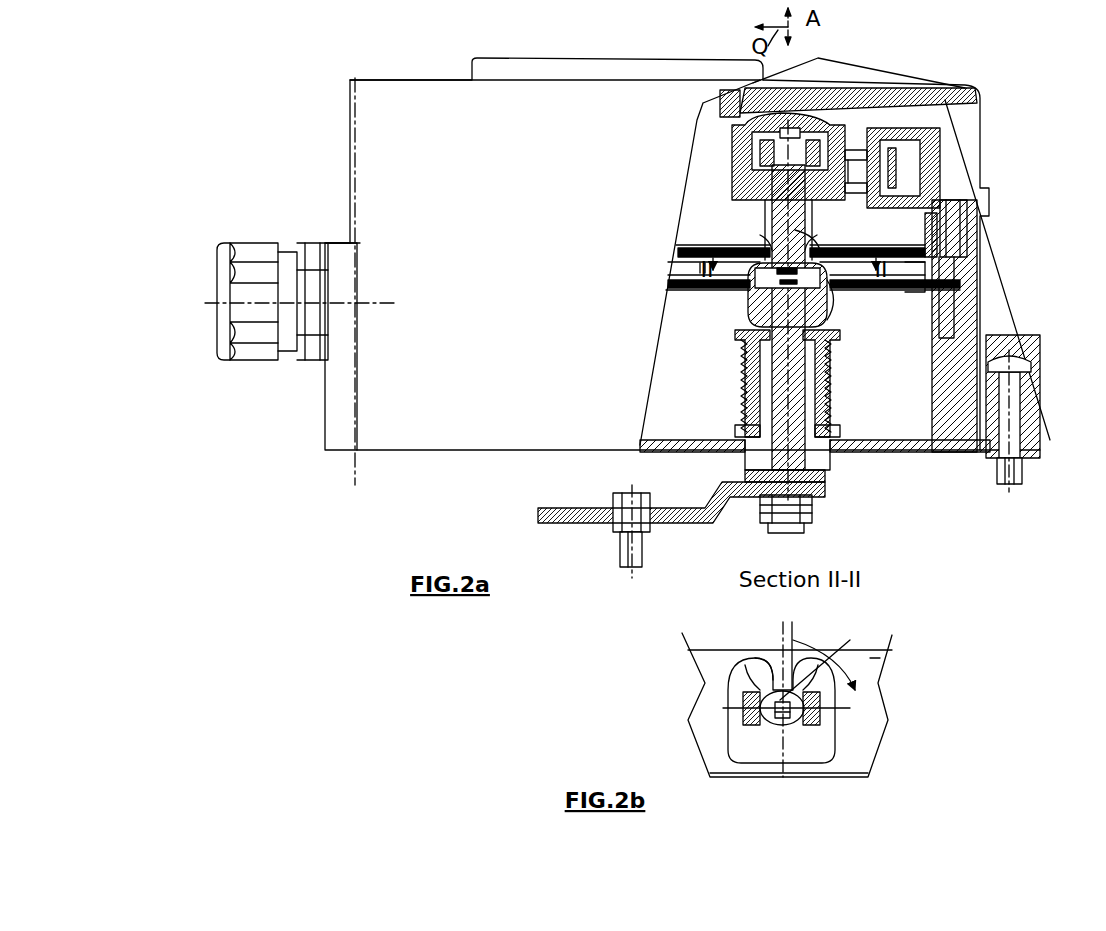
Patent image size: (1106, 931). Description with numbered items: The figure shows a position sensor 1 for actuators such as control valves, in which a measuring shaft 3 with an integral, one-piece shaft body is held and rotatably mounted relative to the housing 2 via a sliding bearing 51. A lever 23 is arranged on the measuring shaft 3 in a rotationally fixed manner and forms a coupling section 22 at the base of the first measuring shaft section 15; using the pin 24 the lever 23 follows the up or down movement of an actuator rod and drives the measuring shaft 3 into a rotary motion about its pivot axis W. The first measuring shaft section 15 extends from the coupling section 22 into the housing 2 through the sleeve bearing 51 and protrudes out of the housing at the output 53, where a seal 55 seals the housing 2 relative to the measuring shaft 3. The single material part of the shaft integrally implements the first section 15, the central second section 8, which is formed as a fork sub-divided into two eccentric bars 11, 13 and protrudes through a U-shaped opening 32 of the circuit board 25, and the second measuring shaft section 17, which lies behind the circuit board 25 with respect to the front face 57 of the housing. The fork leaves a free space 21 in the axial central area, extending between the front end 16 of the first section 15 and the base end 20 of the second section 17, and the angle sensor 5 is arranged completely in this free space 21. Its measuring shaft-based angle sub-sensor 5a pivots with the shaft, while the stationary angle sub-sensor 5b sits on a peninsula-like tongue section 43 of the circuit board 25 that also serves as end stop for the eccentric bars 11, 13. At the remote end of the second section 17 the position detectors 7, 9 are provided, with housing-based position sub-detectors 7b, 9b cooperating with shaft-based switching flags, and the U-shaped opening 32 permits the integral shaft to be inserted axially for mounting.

In FIG. 2a, the position sensor 1 is at (415, 457).
In FIG. 2a, the housing 2 is at (979, 325).
In FIG. 2a, the measuring shaft 3 is at (737, 300).
In FIG. 2b, the measuring shaft 3 is at (833, 732).
In FIG. 2a, the angle sensor 5 is at (768, 243).
In FIG. 2a, the measuring shaft-based angle sub-sensor 5a is at (770, 250).
In FIG. 2b, the stationary angle sub-sensor 5b is at (790, 720).
In FIG. 2a, the position detector 7 is at (960, 226).
In FIG. 2a, the housing-based position sub-detector 7b is at (940, 176).
In FIG. 2a, the second measuring shaft section (central part) 8 is at (840, 313).
In FIG. 2a, the position detector 9 is at (862, 130).
In FIG. 2a, the housing-based position sub-detector 9b is at (903, 130).
In FIG. 2a, the eccentric bar 11 is at (748, 290).
In FIG. 2b, the eccentric bar 11 is at (743, 700).
In FIG. 2a, the eccentric bar 13 is at (800, 292).
In FIG. 2b, the eccentric bar 13 is at (833, 700).
In FIG. 2a, the first measuring shaft section 15 is at (800, 392).
In FIG. 2a, the front end of the first measuring shaft section 16 is at (738, 333).
In FIG. 2a, the second measuring shaft section 17 is at (780, 213).
In FIG. 2a, the base end of the second measuring shaft section 20 is at (810, 262).
In FIG. 2a, the free space 21 is at (797, 273).
In FIG. 2b, the free space 21 is at (800, 683).
In FIG. 2a, the coupling section 22 is at (748, 505).
In FIG. 2a, the lever 23 is at (815, 510).
In FIG. 2a, the pin 24 is at (617, 525).
In FIG. 2a, the circuit board 25 is at (926, 283).
In FIG. 2b, the circuit board 25 is at (870, 658).
In FIG. 2a, the opening 32 is at (707, 337).
In FIG. 2b, the opening 32 is at (842, 755).
In FIG. 2a, the tongue section 43 is at (815, 322).
In FIG. 2b, the tongue section 43 is at (757, 678).
In FIG. 2a, the sliding bearing 51 is at (810, 420).
In FIG. 2a, the output (opening) of the housing 53 is at (762, 432).
In FIG. 2a, the seal 55 is at (830, 465).
In FIG. 2a, the front face of the housing 57 is at (935, 455).
In FIG. 2b, the radius R is at (770, 730).
In FIG. 2b, the pivot axis W is at (782, 720).